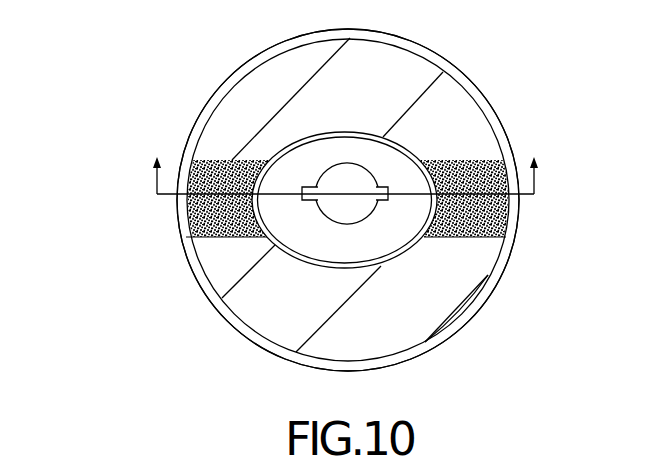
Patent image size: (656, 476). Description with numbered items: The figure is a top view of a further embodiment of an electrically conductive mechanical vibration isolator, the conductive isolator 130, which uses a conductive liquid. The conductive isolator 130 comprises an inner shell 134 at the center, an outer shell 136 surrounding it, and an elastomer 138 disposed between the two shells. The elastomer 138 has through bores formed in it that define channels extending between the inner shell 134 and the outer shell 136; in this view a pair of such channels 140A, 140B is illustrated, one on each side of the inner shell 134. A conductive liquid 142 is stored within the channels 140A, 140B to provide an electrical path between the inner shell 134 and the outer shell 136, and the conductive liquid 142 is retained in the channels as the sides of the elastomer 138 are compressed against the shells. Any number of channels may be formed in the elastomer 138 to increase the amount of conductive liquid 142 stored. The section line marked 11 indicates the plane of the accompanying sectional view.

The conductive isolator 130 is at (104, 348).
The inner shell 134 is at (395, 137).
The outer shell 136 is at (398, 364).
The elastomer 138 is at (287, 310).
The channel 140A is at (200, 158).
The channel 140B is at (482, 162).
The conductive liquid 142 is at (190, 223).
The section line 11- 11 is at (342, 163).